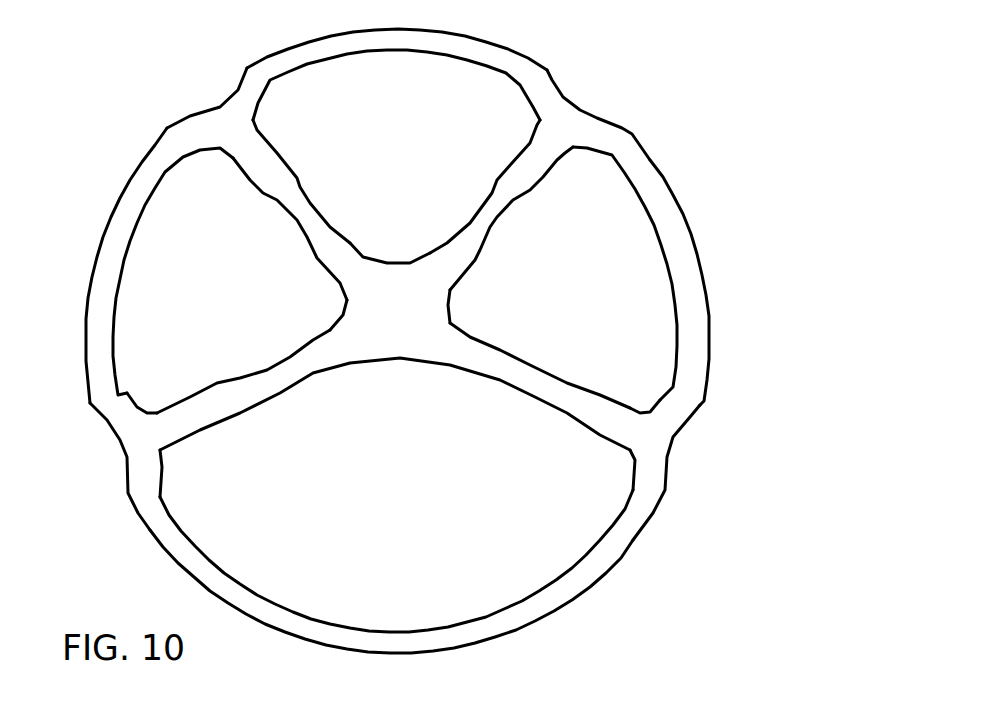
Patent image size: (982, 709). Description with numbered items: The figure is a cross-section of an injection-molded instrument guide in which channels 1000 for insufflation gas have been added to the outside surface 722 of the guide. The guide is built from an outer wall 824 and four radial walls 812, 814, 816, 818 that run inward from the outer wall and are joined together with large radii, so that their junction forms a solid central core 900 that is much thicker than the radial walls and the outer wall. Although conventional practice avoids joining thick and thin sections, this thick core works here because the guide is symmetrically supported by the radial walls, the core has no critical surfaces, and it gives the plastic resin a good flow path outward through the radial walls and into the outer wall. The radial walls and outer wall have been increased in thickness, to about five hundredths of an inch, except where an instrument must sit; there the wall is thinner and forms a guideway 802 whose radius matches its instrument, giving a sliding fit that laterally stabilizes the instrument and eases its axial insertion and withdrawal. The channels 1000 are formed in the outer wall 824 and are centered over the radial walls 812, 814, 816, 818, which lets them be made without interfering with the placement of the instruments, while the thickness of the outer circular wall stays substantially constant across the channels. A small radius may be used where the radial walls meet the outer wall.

The outside surface 722 is at (682, 205).
The channels 1000 is at (222, 108).
The radial wall 814 is at (250, 155).
The radial wall 816 is at (547, 147).
The outer wall 824 is at (637, 167).
The solid central core 900 is at (397, 310).
The guideway 802 is at (273, 397).
The radial wall 812 is at (167, 430).
The radial wall 818 is at (630, 425).